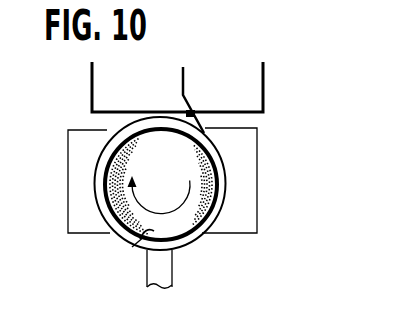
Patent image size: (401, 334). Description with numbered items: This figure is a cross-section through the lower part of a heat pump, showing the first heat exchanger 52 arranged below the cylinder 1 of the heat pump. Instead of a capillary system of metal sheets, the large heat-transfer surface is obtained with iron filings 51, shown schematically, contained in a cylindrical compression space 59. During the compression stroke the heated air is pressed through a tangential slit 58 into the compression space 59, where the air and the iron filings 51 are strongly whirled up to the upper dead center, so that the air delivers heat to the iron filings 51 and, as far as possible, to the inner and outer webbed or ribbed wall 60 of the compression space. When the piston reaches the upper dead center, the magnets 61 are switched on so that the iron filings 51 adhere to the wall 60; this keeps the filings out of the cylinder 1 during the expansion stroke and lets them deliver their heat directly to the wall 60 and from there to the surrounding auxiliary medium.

The cylinder 1 is at (91, 85).
The iron filings 51 is at (217, 172).
The first heat exchanger 52 is at (206, 250).
The tangential slit 58 is at (197, 122).
The compression space 59 is at (132, 247).
The wall 60 is at (218, 203).
The magnets 61 is at (82, 163).